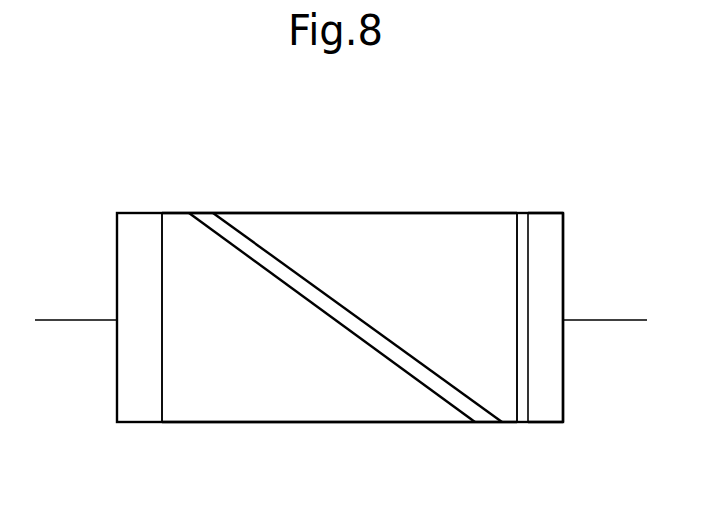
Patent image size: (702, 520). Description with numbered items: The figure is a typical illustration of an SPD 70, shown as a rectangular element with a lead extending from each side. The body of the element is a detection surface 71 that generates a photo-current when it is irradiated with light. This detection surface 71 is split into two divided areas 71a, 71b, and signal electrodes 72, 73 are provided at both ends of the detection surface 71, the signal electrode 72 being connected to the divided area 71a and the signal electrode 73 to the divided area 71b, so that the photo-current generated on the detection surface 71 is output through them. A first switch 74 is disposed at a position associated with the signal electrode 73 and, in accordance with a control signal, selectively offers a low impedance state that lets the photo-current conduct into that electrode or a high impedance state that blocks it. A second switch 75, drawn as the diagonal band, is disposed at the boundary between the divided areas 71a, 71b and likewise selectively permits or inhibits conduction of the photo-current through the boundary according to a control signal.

The SPD 70 is at (160, 186).
The detection surface 71 is at (413, 184).
The divided area 71a is at (250, 422).
The divided area 71b is at (477, 222).
The signal electrode 72 is at (143, 422).
The signal electrode 73 is at (550, 422).
The first switch 74 is at (520, 422).
The second switch 75 is at (406, 360).